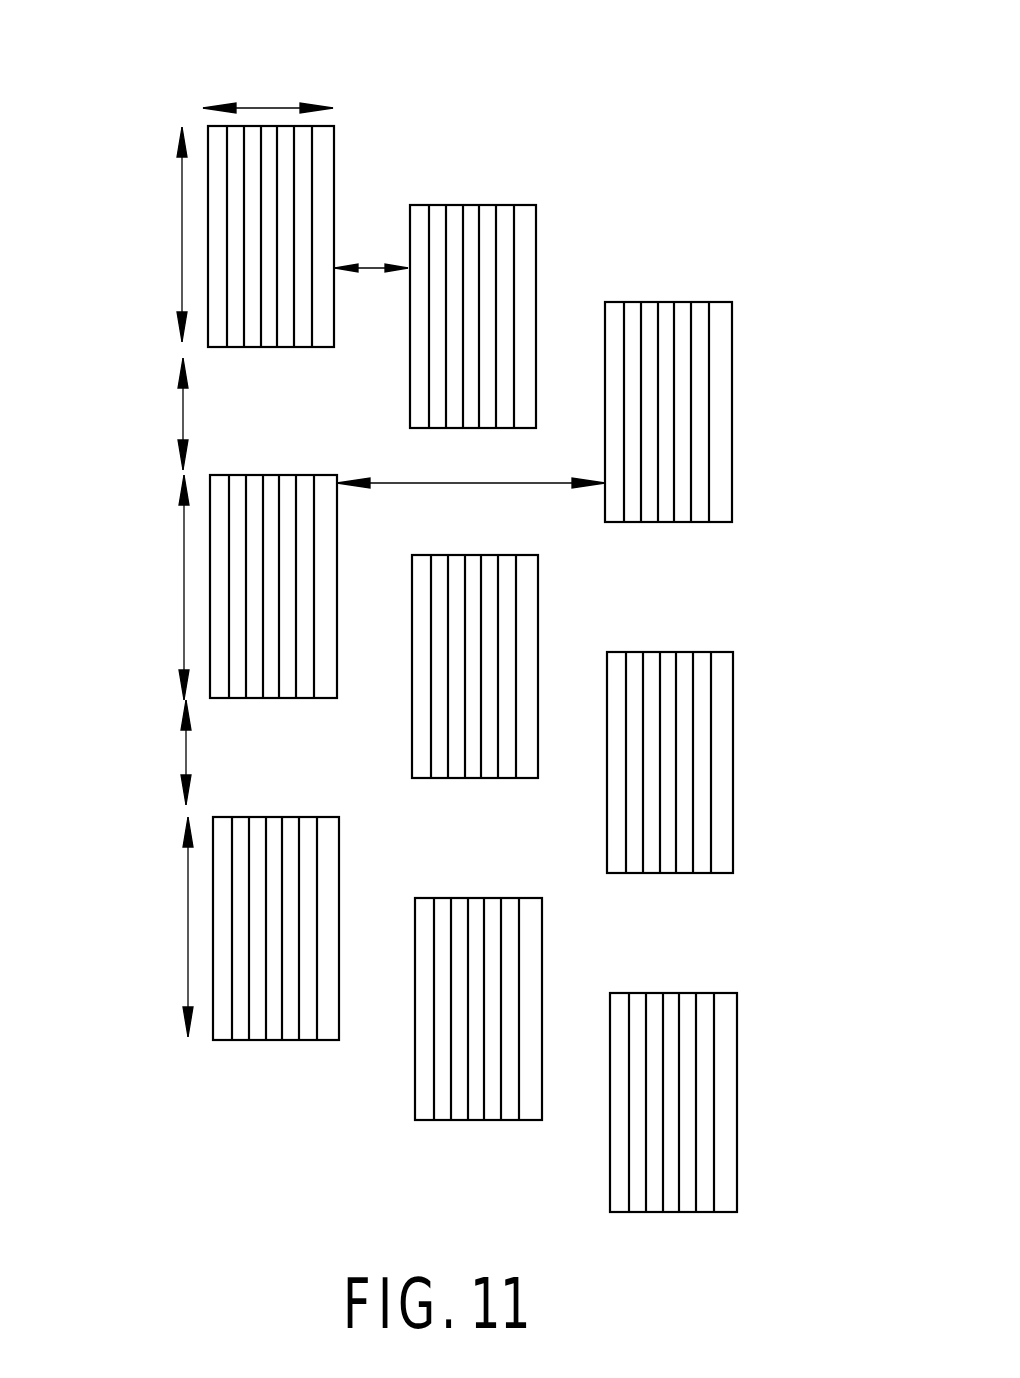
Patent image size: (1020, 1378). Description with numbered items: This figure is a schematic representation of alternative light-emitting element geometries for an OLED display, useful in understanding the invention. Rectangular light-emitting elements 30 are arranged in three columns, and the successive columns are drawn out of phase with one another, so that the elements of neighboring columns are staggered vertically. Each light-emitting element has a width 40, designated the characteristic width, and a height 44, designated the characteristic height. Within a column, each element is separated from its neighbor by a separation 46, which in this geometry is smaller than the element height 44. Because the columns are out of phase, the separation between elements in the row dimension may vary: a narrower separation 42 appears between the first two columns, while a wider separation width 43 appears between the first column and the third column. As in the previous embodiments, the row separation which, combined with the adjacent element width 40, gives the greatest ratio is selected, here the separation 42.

The light-emitting element 30 is at (732, 423).
The width 40 is at (272, 108).
The separation 42 is at (371, 270).
The separation width 43 is at (560, 490).
The height 44 is at (182, 233).
The separation 46 is at (183, 421).